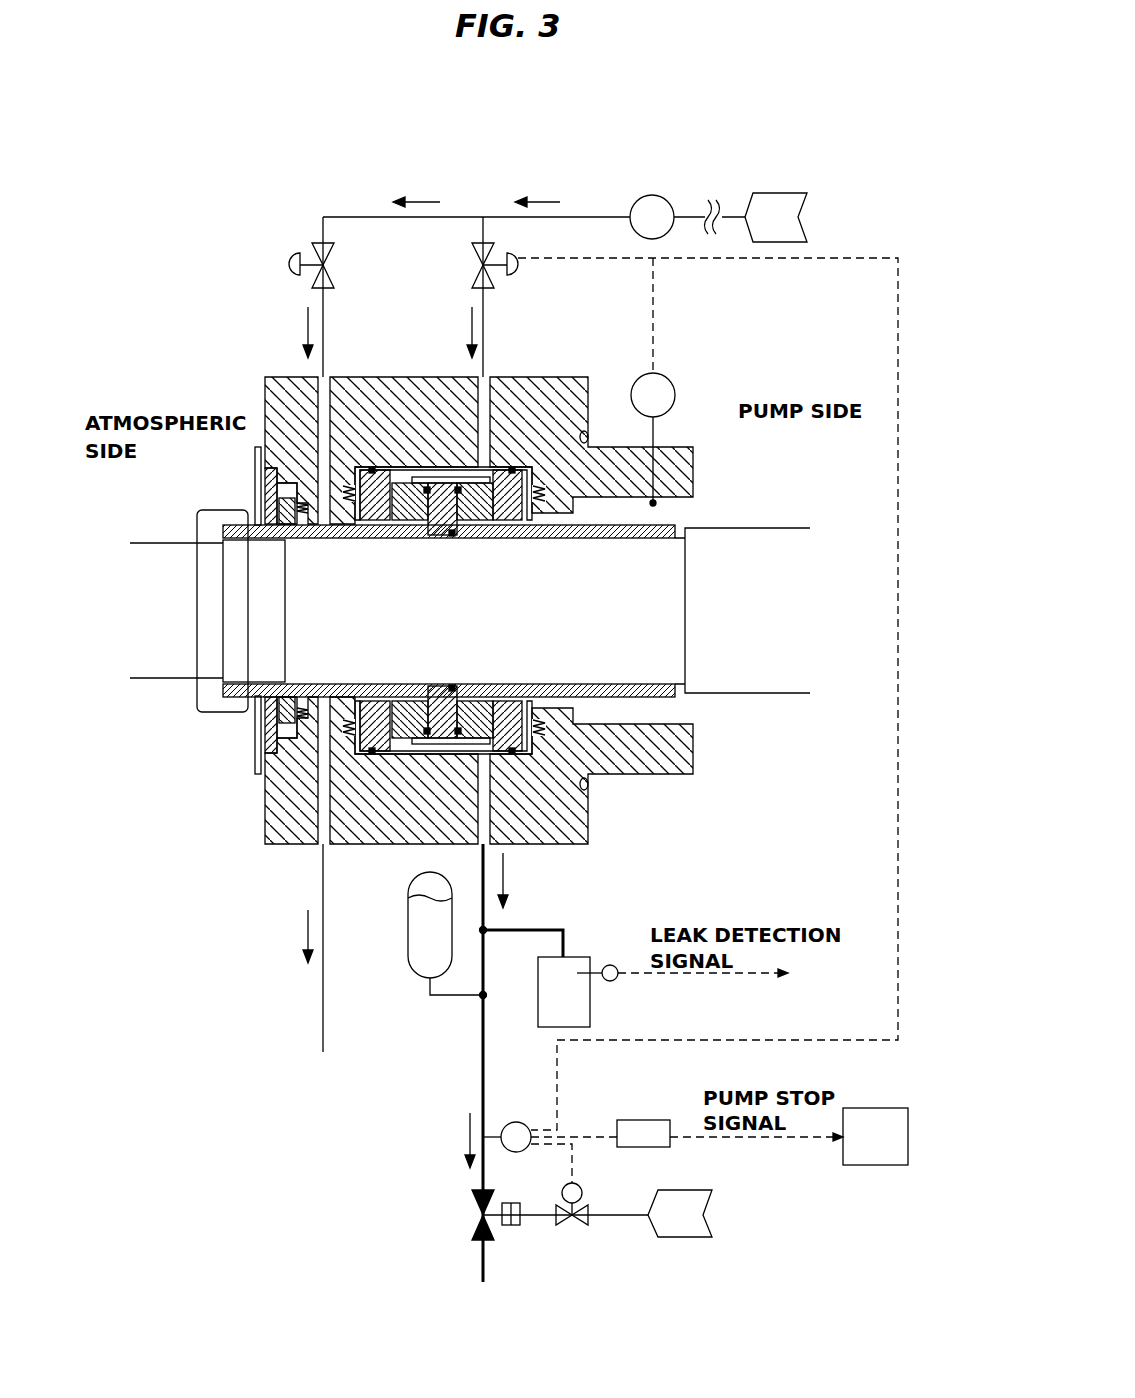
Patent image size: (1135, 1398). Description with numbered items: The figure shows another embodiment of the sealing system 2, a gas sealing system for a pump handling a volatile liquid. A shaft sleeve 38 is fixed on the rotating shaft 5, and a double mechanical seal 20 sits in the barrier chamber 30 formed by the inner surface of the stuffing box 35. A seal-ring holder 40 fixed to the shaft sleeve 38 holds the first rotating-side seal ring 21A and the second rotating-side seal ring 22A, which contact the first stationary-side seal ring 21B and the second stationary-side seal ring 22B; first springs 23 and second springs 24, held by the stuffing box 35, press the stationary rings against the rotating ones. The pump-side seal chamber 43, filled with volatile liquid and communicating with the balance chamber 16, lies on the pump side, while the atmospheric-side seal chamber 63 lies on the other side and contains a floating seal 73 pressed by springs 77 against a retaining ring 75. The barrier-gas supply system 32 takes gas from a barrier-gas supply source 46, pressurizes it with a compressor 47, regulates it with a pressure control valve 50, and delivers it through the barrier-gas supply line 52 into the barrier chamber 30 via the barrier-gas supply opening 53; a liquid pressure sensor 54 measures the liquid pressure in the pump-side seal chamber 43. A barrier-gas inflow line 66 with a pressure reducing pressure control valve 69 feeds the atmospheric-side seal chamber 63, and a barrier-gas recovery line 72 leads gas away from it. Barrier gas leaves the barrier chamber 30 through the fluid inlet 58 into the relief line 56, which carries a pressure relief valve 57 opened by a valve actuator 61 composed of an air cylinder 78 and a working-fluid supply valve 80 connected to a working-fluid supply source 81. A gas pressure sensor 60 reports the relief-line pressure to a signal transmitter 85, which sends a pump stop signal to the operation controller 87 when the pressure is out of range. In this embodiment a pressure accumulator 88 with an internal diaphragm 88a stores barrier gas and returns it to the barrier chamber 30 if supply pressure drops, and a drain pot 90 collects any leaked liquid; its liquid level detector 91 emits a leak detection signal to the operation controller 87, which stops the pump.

The sealing system 2 is at (176, 201).
The rotating shaft 5 is at (772, 527).
The balance chamber 16 is at (755, 508).
The mechanical seal 20 is at (500, 465).
The first rotating-side seal ring 21A is at (475, 520).
The first stationary-side seal ring 21B is at (508, 520).
The second rotating-side seal ring 22A is at (410, 520).
The second stationary-side seal ring 22B is at (380, 520).
The first springs 23 is at (538, 500).
The second springs 24 is at (350, 503).
The barrier chamber 30 is at (440, 477).
The barrier-gas supply system 32 is at (588, 157).
The stuffing box 35 is at (398, 377).
The shaft sleeve 38 is at (585, 540).
The seal-ring holder 40 is at (440, 535).
The pump-side seal chamber 43 is at (642, 519).
The barrier-gas supply source 46 is at (776, 192).
The compressor 47 is at (657, 195).
The pressure control valve 50 is at (495, 270).
The barrier-gas supply line 52 is at (510, 216).
The barrier-gas supply opening 53 is at (482, 520).
The liquid pressure sensor 54 is at (668, 378).
The relief line 56 is at (481, 1040).
The pressure relief valve 57 is at (470, 1215).
The fluid inlet 58 is at (450, 735).
The gas pressure sensor 60 is at (510, 1122).
The valve actuator 61 is at (549, 1256).
The atmospheric-side seal chamber 63 is at (285, 482).
The barrier-gas inflow line 66 is at (355, 216).
The pressure control valve 69 is at (305, 252).
The barrier-gas recovery line 72 is at (322, 872).
The floating seal 73 is at (283, 505).
The retaining ring 75 is at (268, 480).
The springs 77 is at (300, 520).
The air cylinder 78 is at (511, 1226).
The working-fluid supply valve 80 is at (580, 1226).
The working-fluid supply source 81 is at (690, 1240).
The signal transmitter 85 is at (655, 1120).
The operation controller 87 is at (870, 1166).
The pressure accumulator 88 is at (407, 940).
The diaphragm 88a is at (413, 895).
The drain pot 90 is at (575, 957).
The liquid level detector 91 is at (615, 966).